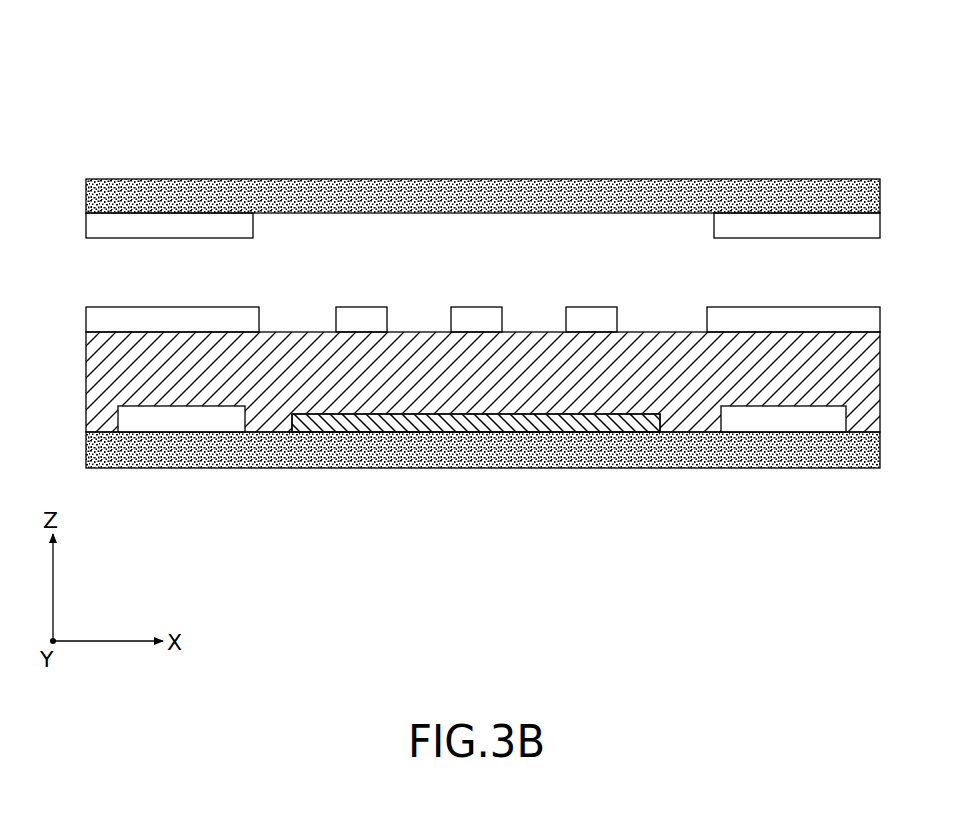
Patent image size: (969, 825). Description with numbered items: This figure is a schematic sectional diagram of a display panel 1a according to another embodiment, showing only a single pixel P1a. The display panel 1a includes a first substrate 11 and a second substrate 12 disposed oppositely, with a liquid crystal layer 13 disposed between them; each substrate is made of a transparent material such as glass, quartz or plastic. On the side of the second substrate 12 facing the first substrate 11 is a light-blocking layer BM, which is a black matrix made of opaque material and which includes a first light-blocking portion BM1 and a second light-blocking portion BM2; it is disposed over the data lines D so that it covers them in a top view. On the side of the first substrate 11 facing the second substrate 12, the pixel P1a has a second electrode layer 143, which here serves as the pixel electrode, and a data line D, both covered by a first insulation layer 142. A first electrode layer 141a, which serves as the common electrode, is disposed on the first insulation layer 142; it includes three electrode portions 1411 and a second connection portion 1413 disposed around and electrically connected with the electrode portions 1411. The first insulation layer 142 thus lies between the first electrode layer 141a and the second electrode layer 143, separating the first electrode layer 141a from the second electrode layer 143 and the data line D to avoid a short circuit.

The display panel 1a is at (117, 60).
The pixel P1a is at (367, 238).
The first substrate 11 is at (86, 450).
The second substrate 12 is at (86, 194).
The liquid crystal layer 13 is at (145, 262).
The first electrode layer 141a is at (445, 301).
The electrode portions 1411 is at (465, 318).
The second connection portion 1413 is at (223, 320).
The first insulation layer 142 is at (95, 371).
The second electrode layer 143 is at (460, 424).
The light-blocking layer BM is at (483, 228).
The first light-blocking portion BM1 is at (797, 226).
The second light-blocking portion BM2 is at (169, 226).
The data line D is at (482, 419).